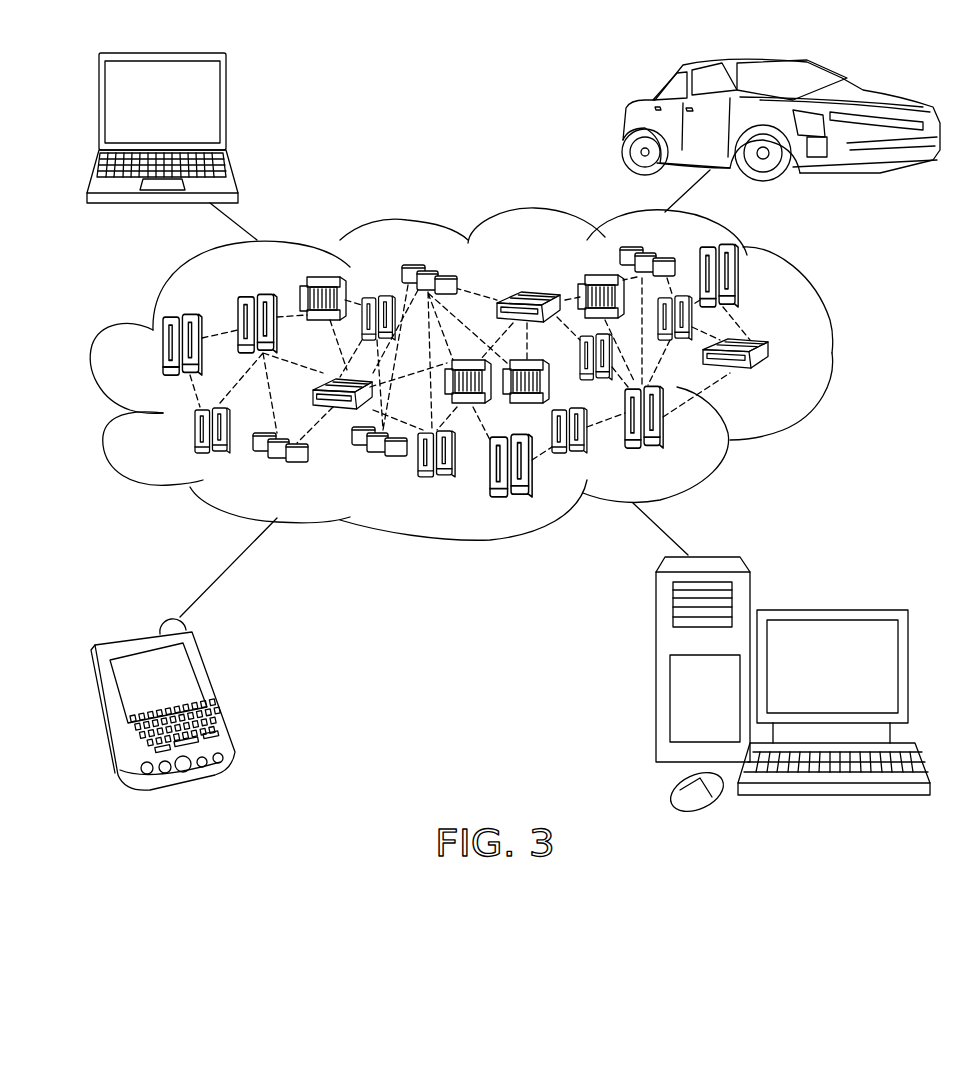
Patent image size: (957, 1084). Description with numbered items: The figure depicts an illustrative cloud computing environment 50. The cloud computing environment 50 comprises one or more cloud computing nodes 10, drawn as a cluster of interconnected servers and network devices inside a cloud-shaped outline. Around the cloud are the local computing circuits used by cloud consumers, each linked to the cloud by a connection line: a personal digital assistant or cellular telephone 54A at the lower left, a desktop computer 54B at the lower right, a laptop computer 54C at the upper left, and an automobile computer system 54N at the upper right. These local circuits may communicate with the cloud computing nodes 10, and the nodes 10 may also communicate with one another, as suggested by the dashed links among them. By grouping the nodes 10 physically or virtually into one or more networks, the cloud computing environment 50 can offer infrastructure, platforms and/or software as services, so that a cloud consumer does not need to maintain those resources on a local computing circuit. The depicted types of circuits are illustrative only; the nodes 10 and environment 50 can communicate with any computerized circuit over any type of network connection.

The cloud computing nodes 10 is at (775, 377).
The cloud computing environment 50 is at (832, 353).
The personal digital assistant or cellular telephone 54A is at (217, 693).
The desktop computer 54B is at (830, 608).
The laptop computer 54C is at (226, 110).
The automobile computer system 54N is at (627, 123).